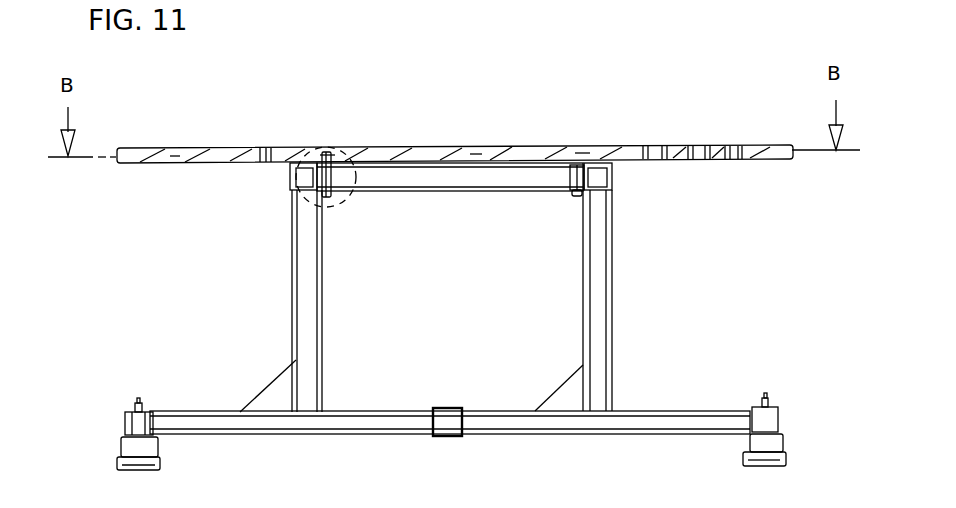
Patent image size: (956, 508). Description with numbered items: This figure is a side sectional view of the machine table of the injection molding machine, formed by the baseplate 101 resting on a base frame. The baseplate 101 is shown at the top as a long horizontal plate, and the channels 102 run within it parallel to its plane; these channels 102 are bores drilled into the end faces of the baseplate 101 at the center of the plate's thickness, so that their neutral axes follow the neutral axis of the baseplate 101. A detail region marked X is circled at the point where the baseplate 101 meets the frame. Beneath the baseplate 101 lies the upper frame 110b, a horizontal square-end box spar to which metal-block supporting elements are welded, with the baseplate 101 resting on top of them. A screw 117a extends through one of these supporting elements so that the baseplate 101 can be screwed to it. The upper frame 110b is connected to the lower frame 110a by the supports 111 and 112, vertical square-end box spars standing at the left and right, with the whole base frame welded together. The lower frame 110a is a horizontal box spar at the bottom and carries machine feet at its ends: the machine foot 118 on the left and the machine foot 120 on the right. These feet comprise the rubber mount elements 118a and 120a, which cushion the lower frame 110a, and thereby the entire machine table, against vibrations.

The baseplate 101 is at (455, 117).
The channels 102 is at (455, 113).
The clip portion X is at (358, 144).
The lower frame 110a is at (450, 389).
The upper frame 110b is at (450, 212).
The support 111 is at (247, 301).
The support 112 is at (630, 300).
The screw 117a is at (584, 195).
The machine foot 118 is at (185, 452).
The rubber mount element 118a is at (189, 457).
The machine foot 120 is at (691, 442).
The rubber mount element 120a is at (750, 445).